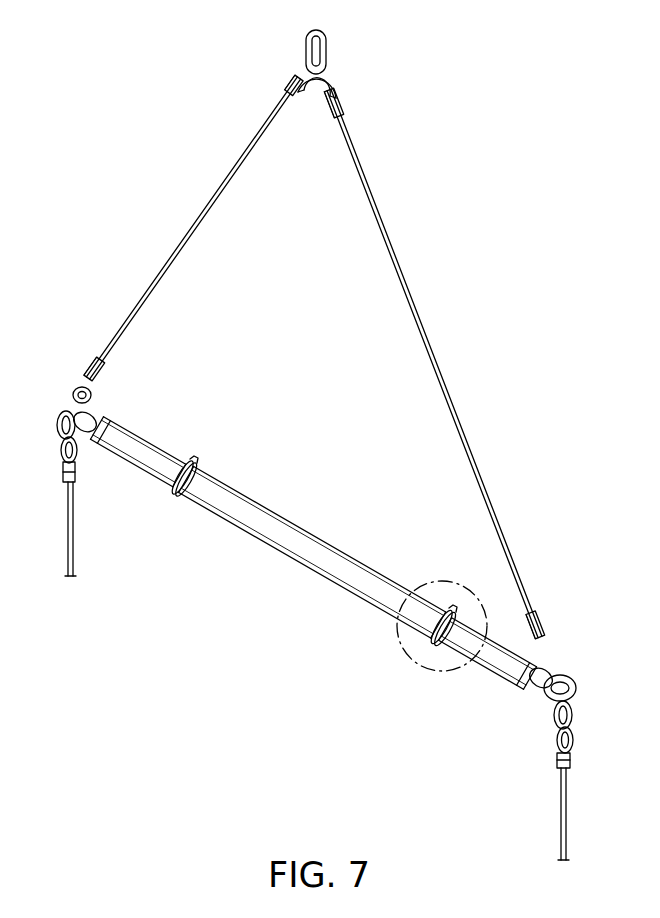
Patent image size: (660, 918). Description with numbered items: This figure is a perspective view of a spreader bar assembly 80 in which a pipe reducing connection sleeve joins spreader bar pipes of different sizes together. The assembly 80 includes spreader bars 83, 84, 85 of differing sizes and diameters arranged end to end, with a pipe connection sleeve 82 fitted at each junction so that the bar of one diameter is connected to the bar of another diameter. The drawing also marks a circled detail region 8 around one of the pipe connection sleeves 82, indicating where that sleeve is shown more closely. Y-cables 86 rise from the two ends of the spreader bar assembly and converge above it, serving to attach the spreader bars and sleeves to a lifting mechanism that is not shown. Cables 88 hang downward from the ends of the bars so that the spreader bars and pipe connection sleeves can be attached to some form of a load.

The spreader bar assembly 80 is at (149, 170).
The Y-cables 86 is at (193, 228).
The spreader bar 83 is at (147, 444).
The spreader bar 84 is at (327, 542).
The spreader bar 85 is at (493, 671).
The pipe connection sleeve 82 is at (198, 453).
The detail view circle (FIG. 8) 8 is at (445, 582).
The cables 88 is at (76, 524).